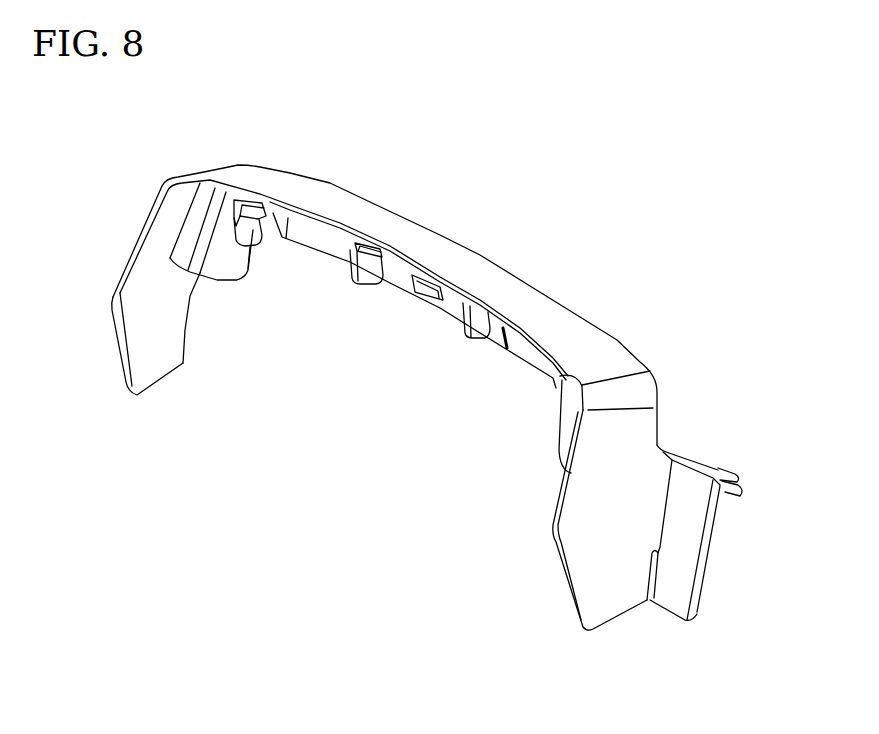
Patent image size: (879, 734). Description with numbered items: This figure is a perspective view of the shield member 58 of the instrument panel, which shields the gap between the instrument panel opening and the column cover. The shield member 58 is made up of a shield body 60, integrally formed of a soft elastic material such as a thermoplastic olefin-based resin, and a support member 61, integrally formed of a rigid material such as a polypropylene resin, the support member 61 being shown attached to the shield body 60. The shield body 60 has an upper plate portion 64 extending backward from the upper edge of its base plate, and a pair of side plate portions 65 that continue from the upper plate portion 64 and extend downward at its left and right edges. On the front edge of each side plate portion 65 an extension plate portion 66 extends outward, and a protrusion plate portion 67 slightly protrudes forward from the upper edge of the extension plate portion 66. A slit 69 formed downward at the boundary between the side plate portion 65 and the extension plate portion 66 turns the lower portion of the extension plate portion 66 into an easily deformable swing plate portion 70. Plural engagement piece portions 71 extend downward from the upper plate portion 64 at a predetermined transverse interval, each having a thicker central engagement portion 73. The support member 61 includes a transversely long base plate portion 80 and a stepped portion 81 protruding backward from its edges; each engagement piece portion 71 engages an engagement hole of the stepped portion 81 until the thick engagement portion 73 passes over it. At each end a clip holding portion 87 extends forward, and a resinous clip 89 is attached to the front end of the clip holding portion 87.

The shield member 58 is at (454, 410).
The shield body 60 is at (454, 410).
The support member 61 is at (304, 256).
The upper plate portion 64 is at (405, 228).
The side plate portion 65 is at (158, 360).
The extension plate portion 66 is at (682, 515).
The protrusion plate portion 67 is at (690, 457).
The slit 69 is at (656, 580).
The swing plate portion 70 is at (668, 605).
The engagement piece portion 71 is at (247, 247).
The engagement portion 73 is at (256, 210).
The base plate portion 80 is at (396, 287).
The stepped portion 81 is at (183, 242).
The clip holding portion 87 is at (740, 488).
The resinous clip 89 is at (725, 468).